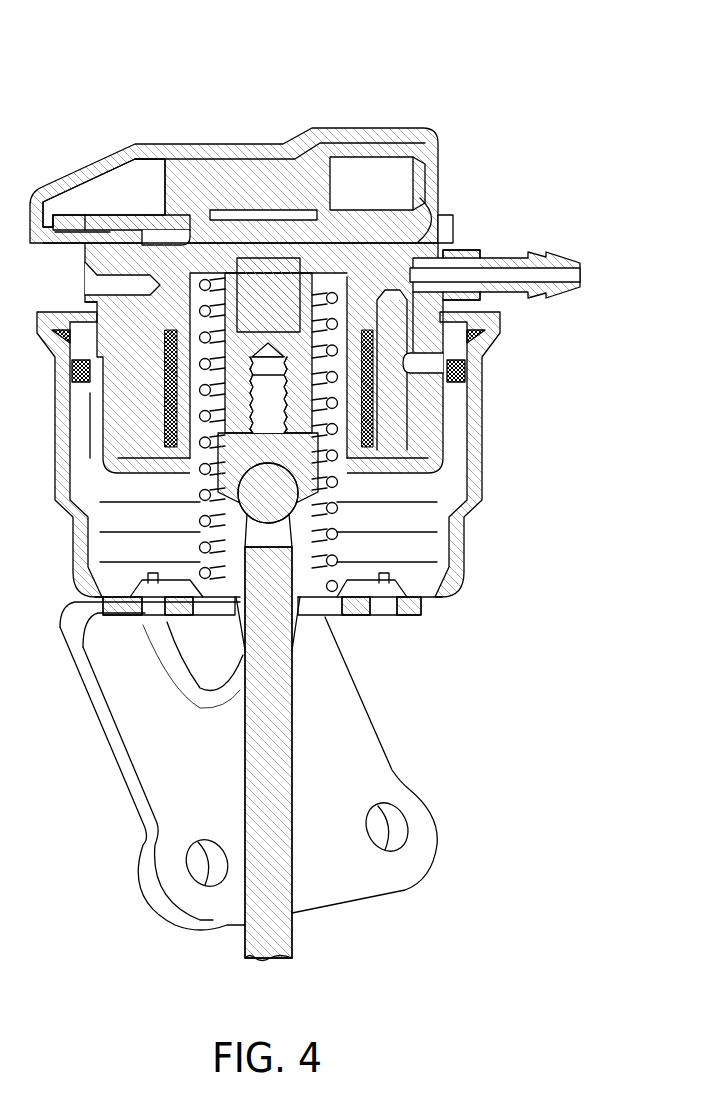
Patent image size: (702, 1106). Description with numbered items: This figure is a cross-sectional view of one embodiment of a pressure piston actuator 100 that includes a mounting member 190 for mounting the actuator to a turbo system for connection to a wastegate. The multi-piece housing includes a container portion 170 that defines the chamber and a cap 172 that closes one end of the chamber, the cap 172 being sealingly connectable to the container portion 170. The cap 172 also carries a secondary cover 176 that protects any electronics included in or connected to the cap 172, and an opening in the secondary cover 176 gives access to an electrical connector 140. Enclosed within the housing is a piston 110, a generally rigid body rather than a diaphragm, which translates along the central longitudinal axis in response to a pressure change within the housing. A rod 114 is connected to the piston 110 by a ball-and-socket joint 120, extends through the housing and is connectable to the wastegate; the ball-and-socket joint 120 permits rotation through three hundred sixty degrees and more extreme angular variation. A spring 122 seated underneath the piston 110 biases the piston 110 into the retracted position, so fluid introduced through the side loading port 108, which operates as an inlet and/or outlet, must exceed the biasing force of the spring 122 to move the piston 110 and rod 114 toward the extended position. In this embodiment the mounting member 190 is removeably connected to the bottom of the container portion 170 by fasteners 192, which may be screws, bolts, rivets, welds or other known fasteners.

The pressure piston actuator 100 is at (403, 89).
The port 108 is at (560, 257).
The piston 110 is at (443, 417).
The rod 114 is at (285, 795).
The ball-and-socket joint 120 is at (214, 493).
The spring 122 is at (343, 503).
The electrical connector 140 is at (402, 180).
The container portion 170 is at (443, 586).
The cap 172 is at (415, 232).
The secondary cover 176 is at (182, 143).
The mounting member 190 is at (427, 853).
The fasteners 192 is at (143, 602).